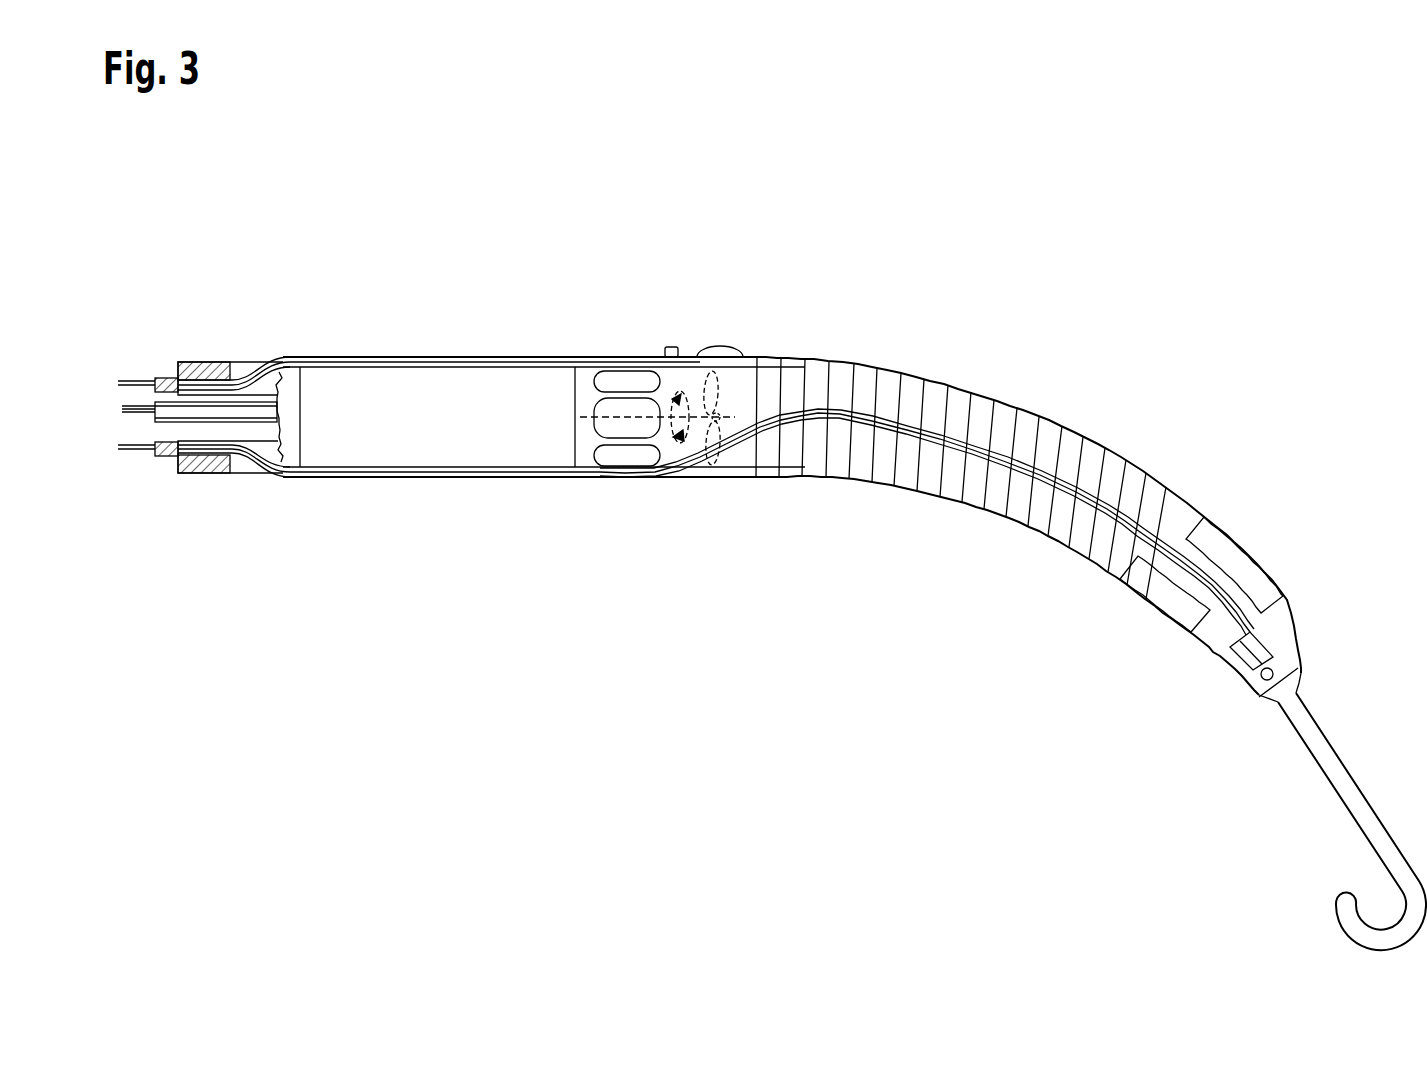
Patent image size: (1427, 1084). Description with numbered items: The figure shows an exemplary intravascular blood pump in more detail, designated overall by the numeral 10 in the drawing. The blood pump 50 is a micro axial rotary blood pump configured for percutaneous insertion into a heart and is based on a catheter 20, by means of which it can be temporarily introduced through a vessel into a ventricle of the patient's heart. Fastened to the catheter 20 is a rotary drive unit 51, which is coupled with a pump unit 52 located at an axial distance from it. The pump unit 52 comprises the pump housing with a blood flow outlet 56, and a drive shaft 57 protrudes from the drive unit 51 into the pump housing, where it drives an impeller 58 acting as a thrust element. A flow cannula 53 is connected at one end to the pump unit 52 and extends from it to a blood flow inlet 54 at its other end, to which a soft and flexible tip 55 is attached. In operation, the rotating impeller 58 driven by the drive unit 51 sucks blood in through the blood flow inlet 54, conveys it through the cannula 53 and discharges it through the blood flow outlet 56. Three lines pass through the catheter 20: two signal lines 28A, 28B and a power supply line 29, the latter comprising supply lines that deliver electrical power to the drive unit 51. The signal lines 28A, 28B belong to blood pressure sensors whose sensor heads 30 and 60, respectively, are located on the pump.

The ultrasound probe assembly 10 is at (283, 301).
The catheter 20 is at (222, 360).
The signal line 28A is at (143, 456).
The signal line 28B is at (130, 378).
The power supply line 29 is at (196, 410).
The sensor head 30 is at (1220, 664).
The blood pump 50 is at (928, 266).
The rotary drive unit 51 is at (503, 435).
The pump unit 52 is at (682, 508).
The flow cannula 53 is at (990, 398).
The blood flow inlet 54 is at (1216, 552).
The soft and flexible tip 55 is at (1352, 792).
The blood flow outlet 56 is at (625, 455).
The drive shaft 57 is at (620, 410).
The impeller 58 is at (717, 432).
The sensor head 60 is at (656, 331).